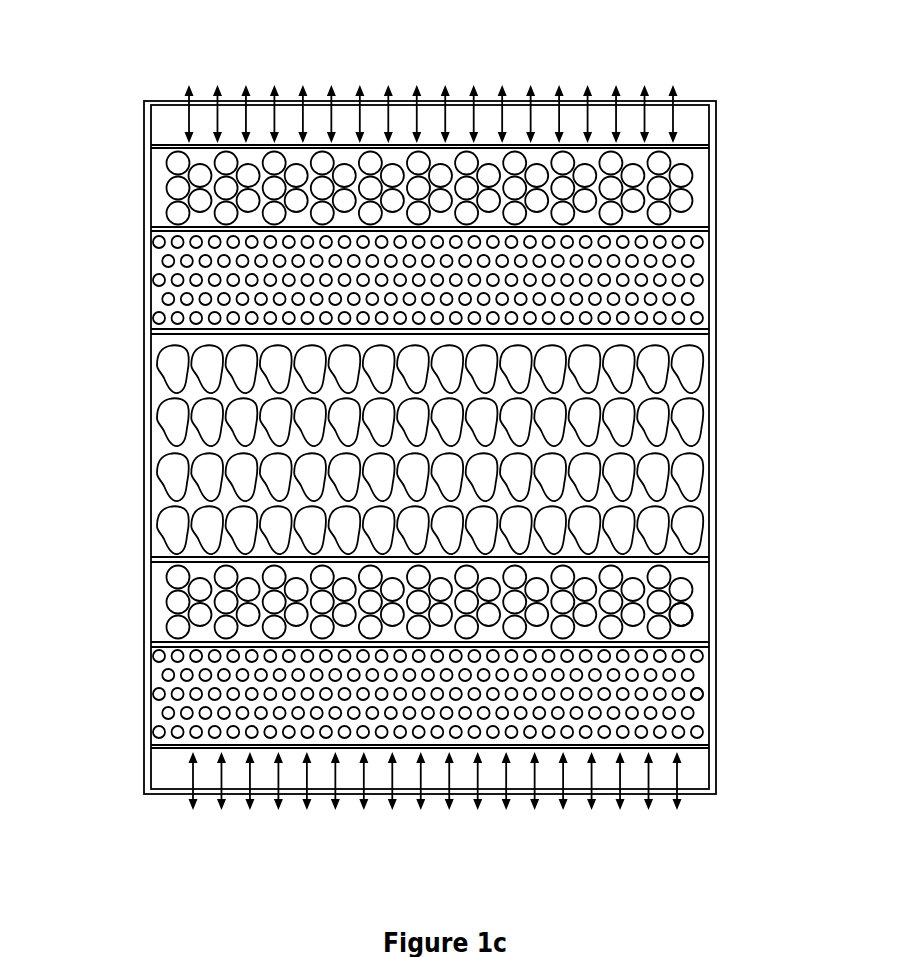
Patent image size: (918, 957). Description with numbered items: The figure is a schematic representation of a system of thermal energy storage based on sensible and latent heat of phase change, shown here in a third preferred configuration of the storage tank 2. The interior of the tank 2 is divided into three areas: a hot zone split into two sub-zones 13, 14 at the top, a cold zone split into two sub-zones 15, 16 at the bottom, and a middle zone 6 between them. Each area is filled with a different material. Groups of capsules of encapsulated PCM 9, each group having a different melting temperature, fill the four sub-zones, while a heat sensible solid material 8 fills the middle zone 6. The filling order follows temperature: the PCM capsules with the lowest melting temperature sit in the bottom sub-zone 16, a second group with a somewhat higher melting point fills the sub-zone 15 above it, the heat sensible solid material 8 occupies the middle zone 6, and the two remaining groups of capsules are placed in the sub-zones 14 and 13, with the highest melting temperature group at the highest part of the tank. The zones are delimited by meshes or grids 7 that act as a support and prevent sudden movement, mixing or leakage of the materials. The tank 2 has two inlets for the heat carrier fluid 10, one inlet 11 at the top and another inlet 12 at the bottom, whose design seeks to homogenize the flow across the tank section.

The storage tank 2 is at (713, 275).
The middle zone 6 is at (173, 499).
The meshes or grids 7 is at (703, 562).
The heat sensible solid material 8 is at (173, 427).
The capsules of encapsulated PCM 9 is at (681, 615).
The heat carrier fluid 10 is at (402, 154).
The feeding outlet or drain tank located at the top part of the tank 11 is at (190, 118).
The feeding outlet or drain tank located in the bottom part of the tank 12 is at (193, 780).
The hot zone sub-zone 13 is at (162, 185).
The hot zone sub-zone 14 is at (167, 311).
The cold zone sub-zone 15 is at (183, 613).
The cold zone sub-zone 16 is at (185, 723).